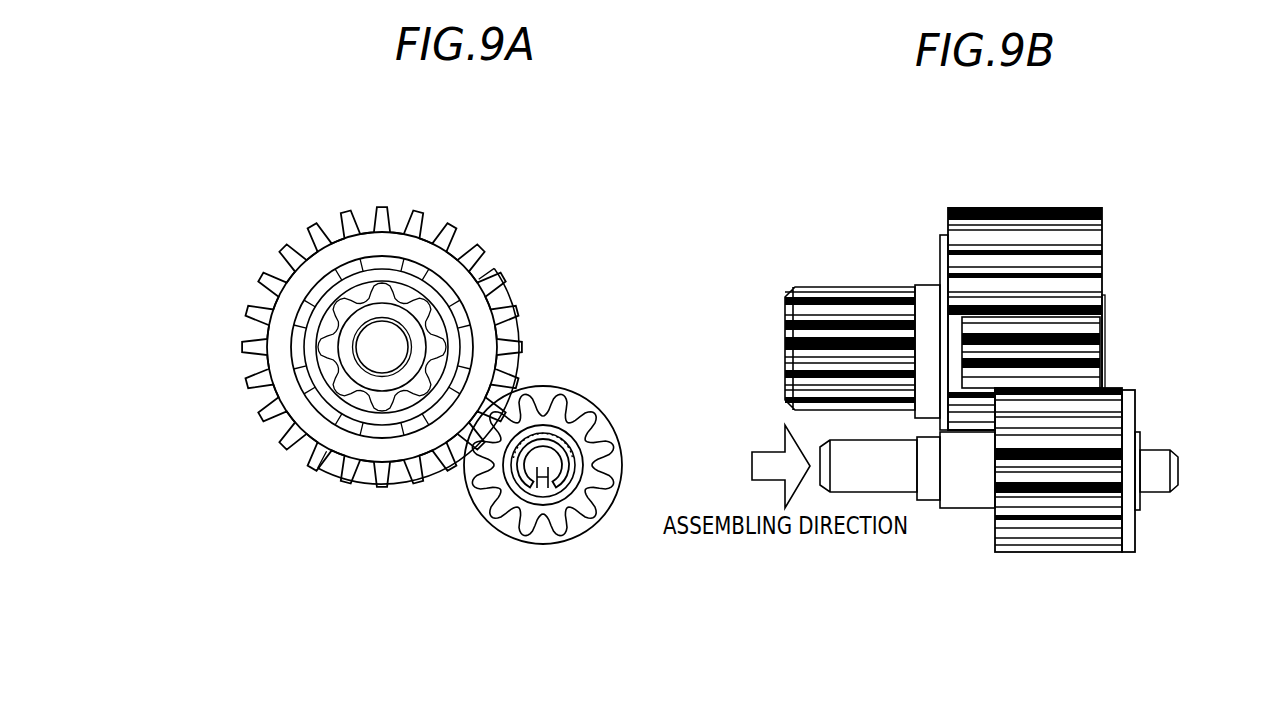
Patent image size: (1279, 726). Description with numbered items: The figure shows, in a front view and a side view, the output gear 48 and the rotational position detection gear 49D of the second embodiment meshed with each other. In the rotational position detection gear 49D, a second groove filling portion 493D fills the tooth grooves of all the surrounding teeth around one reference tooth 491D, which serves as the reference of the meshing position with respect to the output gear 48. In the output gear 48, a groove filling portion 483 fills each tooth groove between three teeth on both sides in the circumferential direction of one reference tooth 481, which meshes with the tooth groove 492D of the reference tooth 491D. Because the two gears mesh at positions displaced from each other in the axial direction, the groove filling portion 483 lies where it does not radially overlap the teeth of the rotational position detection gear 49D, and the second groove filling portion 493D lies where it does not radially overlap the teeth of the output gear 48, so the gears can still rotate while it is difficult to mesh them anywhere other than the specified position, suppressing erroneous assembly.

In FIG. 9A, the output gear 48 is at (504, 250).
In FIG. 9B, the output gear 48 is at (1113, 215).
In FIG. 9A, the reference tooth 481 is at (502, 393).
In FIG. 9A, the groove filling portion 483 is at (520, 343).
In FIG. 9B, the groove filling portion 483 is at (950, 325).
In FIG. 9A, the rotational position detection gear 49D is at (643, 429).
In FIG. 9B, the rotational position detection gear 49D is at (1168, 554).
In FIG. 9A, the reference tooth 491D is at (518, 375).
In FIG. 9A, the tooth groove 492D is at (524, 389).
In FIG. 9A, the second groove filling portion 493D is at (620, 492).
In FIG. 9B, the second groove filling portion 493D is at (1130, 402).